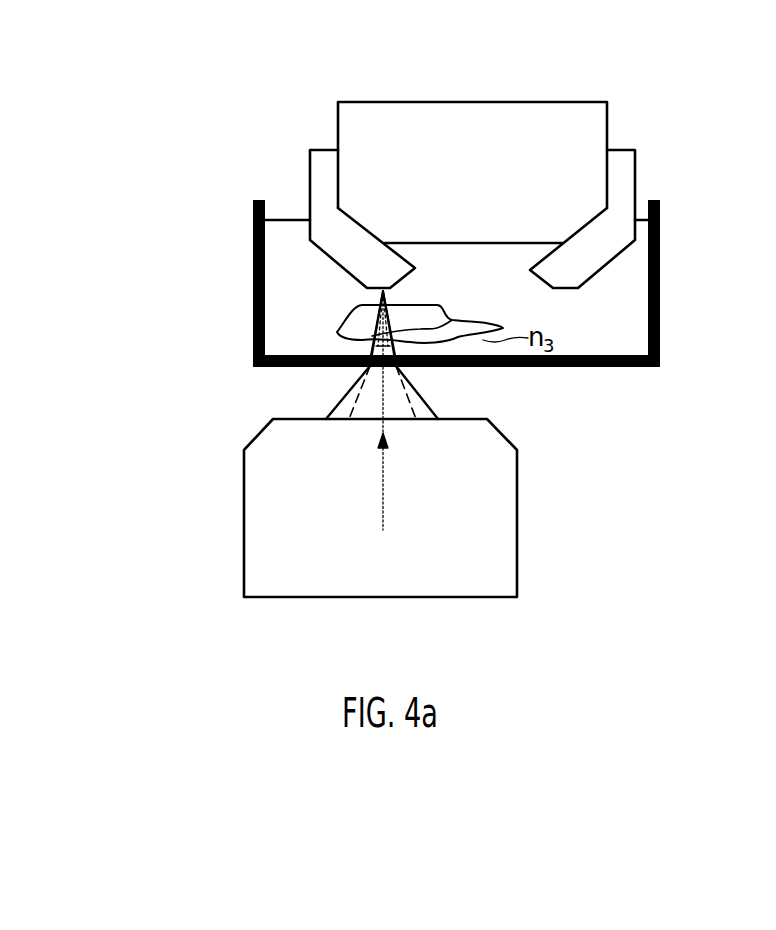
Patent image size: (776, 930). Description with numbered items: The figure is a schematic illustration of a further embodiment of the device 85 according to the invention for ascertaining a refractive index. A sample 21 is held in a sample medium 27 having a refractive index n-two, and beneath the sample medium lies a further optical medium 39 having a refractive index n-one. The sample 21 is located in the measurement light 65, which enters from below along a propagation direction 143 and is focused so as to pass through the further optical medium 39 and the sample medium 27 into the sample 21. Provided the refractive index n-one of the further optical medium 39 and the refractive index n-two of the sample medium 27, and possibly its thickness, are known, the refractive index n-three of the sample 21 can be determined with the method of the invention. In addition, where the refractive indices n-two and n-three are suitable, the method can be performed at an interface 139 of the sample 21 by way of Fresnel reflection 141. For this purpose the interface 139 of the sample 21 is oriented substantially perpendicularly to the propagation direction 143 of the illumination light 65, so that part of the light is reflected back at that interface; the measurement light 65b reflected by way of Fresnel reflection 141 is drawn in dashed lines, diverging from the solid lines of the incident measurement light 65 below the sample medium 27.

The device 85 is at (318, 68).
The sample medium 27 is at (632, 280).
The sample 21 is at (480, 322).
The interface 139 is at (362, 348).
The Fresnel reflection 141 is at (373, 366).
The measurement light 65 is at (436, 410).
The reflected measurement light 65b is at (355, 402).
The further optical medium 39 is at (458, 378).
The propagation direction 143 is at (385, 498).